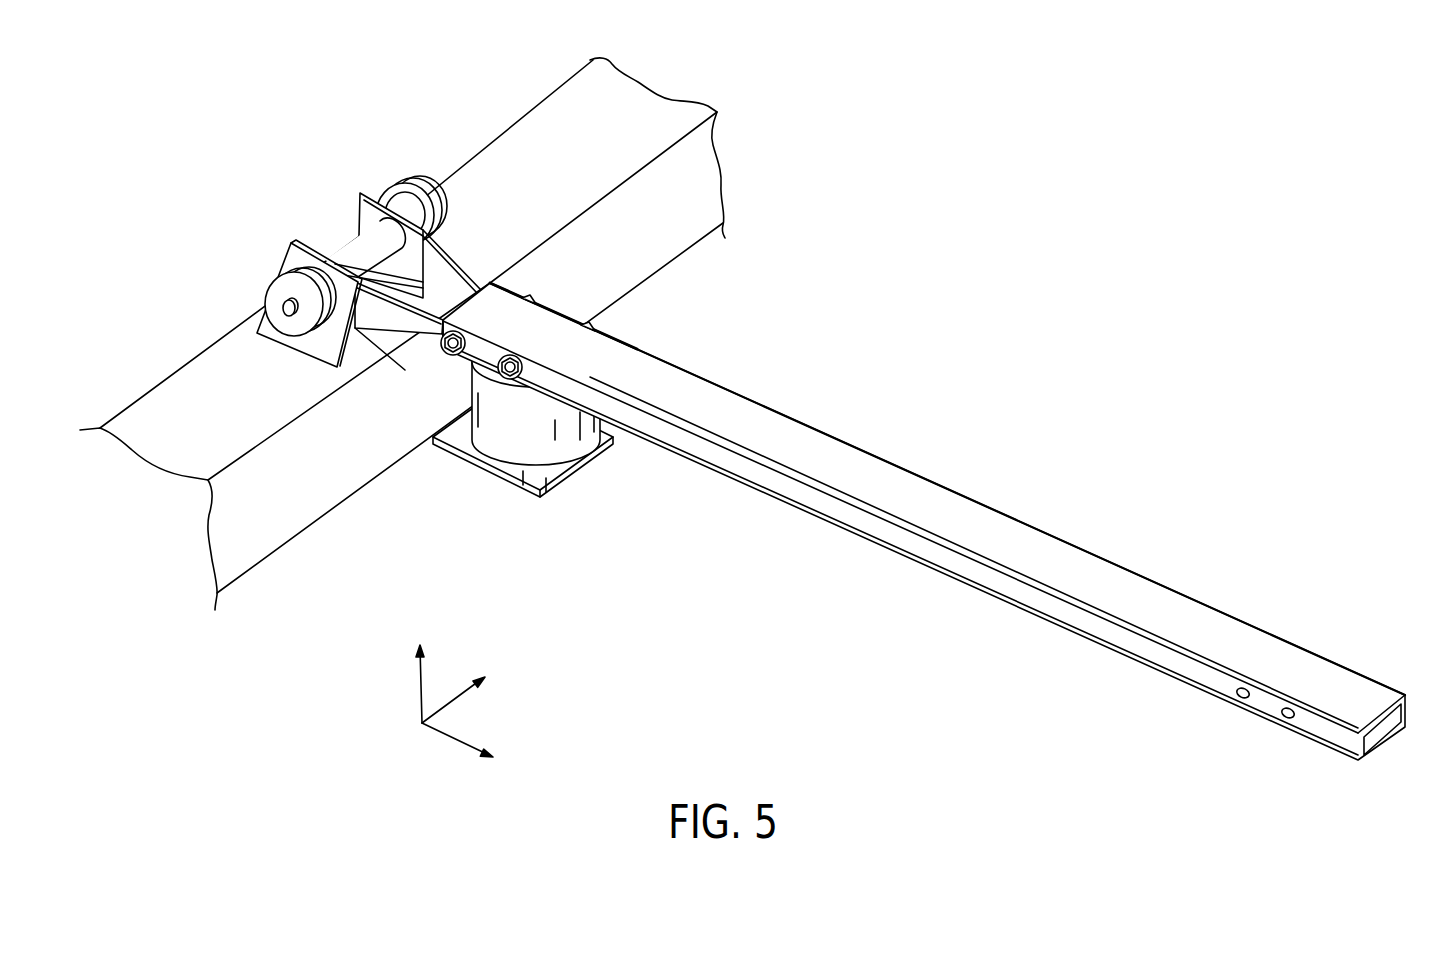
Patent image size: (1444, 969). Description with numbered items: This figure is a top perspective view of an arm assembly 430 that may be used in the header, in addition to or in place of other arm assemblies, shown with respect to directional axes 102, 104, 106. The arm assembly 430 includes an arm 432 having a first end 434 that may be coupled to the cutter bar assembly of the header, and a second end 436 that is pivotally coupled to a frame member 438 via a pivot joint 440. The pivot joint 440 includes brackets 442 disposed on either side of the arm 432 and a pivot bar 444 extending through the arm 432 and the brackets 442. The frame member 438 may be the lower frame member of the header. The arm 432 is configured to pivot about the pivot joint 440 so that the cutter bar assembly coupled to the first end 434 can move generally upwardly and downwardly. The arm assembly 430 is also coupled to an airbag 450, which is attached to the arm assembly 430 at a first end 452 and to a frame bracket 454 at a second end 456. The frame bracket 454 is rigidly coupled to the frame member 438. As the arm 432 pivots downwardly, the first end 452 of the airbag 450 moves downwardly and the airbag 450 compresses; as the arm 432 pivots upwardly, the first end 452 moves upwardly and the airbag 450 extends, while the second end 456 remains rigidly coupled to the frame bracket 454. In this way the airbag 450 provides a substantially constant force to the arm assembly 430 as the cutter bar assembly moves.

The longitudinal direction 102 is at (447, 738).
The vertical direction 104 is at (420, 690).
The lateral direction 106 is at (447, 705).
The arm assembly 430 is at (916, 521).
The arm 432 is at (917, 473).
The first end 434 is at (1403, 676).
The second end 436 is at (341, 248).
The frame member 438 is at (222, 340).
The pivot joint 440 is at (444, 196).
The brackets 442 is at (300, 360).
The pivot bar 444 is at (290, 304).
The airbag 450 is at (541, 440).
The first end 452 is at (532, 382).
The frame bracket 454 is at (445, 457).
The second end 456 is at (496, 494).